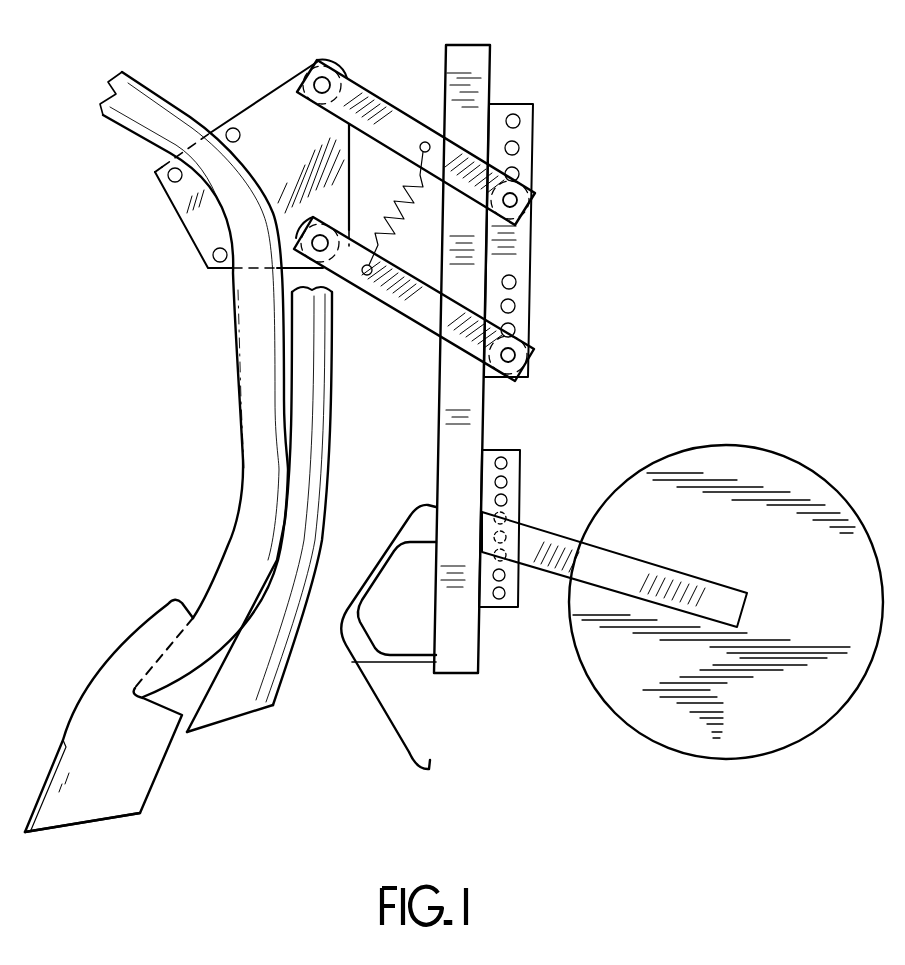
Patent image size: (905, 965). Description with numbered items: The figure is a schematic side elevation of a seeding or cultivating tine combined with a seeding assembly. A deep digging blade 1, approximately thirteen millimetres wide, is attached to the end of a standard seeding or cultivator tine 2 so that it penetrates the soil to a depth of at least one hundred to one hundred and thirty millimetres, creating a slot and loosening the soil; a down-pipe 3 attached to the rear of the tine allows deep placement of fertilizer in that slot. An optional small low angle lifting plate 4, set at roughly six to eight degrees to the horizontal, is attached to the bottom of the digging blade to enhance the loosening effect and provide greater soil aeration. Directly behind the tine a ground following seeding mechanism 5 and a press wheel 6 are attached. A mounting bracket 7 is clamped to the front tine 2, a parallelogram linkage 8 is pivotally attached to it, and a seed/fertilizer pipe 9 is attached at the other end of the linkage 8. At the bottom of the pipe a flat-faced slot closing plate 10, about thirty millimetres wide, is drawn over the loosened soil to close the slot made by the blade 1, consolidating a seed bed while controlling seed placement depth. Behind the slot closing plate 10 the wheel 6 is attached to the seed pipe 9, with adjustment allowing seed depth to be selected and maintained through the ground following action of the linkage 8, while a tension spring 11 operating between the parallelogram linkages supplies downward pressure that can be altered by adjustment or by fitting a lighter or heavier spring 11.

The deep digging blade 1 is at (152, 765).
The seeding or cultivator tine 2 is at (232, 572).
The down-pipe 3 is at (318, 484).
The lifting plate 4 is at (112, 808).
The ground following seeding mechanism 5 is at (568, 195).
The press wheel 6 is at (730, 458).
The mounting bracket 7 is at (262, 112).
The parallelogram linkage 8 is at (370, 98).
The seed/fertilizer pipe 9 is at (467, 660).
The slot closing plate 10 is at (400, 753).
The tension spring 11 is at (392, 290).